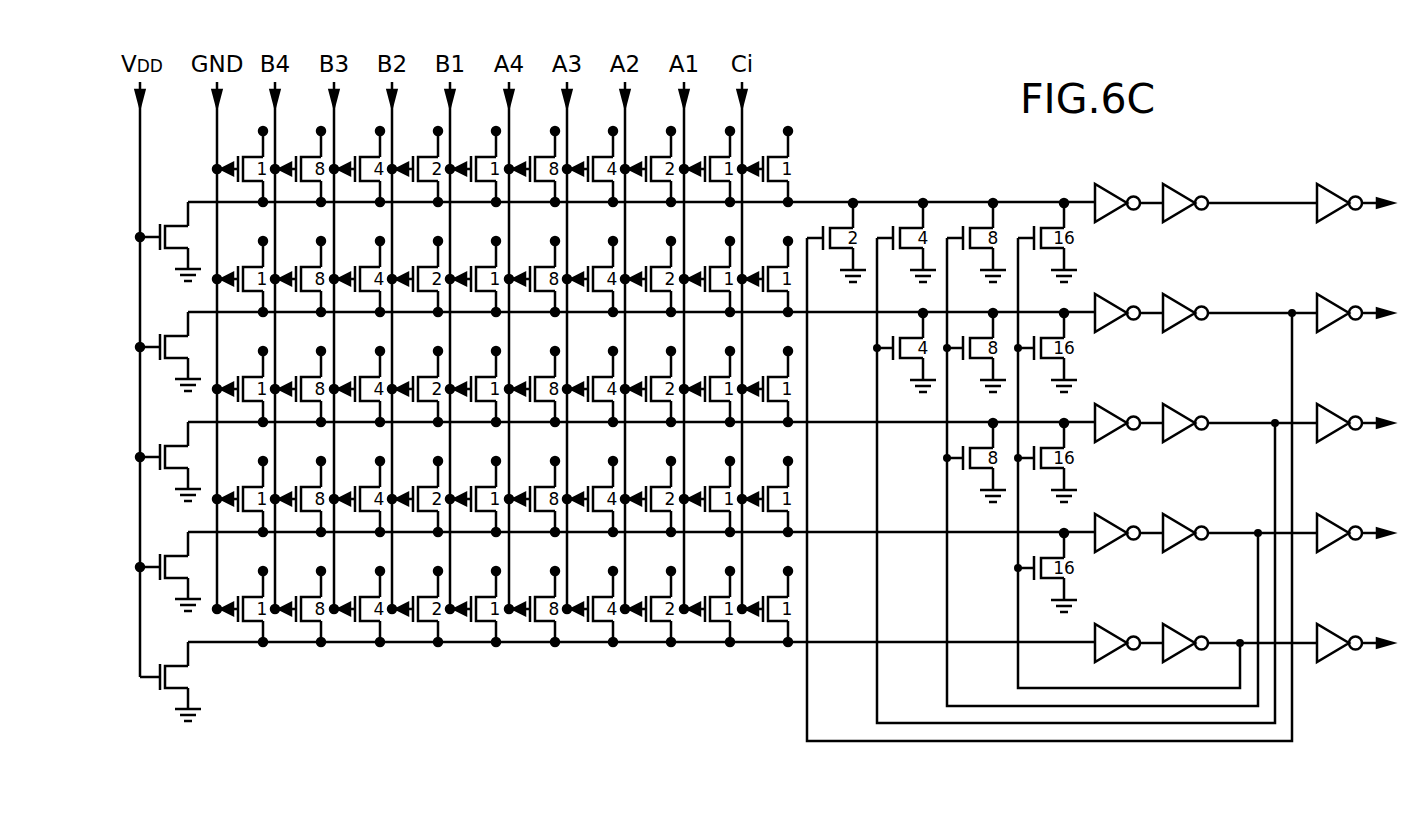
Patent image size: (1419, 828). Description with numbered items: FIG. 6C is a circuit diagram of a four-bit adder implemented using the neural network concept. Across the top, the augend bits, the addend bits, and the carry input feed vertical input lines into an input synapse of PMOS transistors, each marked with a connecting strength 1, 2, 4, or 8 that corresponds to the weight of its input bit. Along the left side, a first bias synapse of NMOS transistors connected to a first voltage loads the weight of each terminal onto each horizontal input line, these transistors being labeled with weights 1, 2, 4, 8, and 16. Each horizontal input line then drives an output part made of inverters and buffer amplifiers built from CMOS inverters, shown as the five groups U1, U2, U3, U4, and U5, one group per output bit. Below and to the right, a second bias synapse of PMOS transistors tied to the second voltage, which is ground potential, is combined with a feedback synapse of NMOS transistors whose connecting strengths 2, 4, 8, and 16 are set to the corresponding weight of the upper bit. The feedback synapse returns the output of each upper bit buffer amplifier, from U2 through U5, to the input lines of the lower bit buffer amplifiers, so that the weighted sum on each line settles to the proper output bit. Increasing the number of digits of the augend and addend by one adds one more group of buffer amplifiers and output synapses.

The unit-width pull-up transistor 1 is at (168, 241).
The 2x-width pull-up transistor 2 is at (168, 351).
The 4x-width pull-up transistor 4 is at (168, 461).
The 8x-width pull-up transistor 8 is at (168, 571).
The 16x-width pull-up transistor 16 is at (170, 681).
The output inverter chain U1 is at (1244, 192).
The output inverter chain U2 is at (1244, 302).
The output inverter chain U3 is at (1244, 412).
The output inverter chain U4 is at (1244, 522).
The output inverter chain U5 is at (1244, 632).